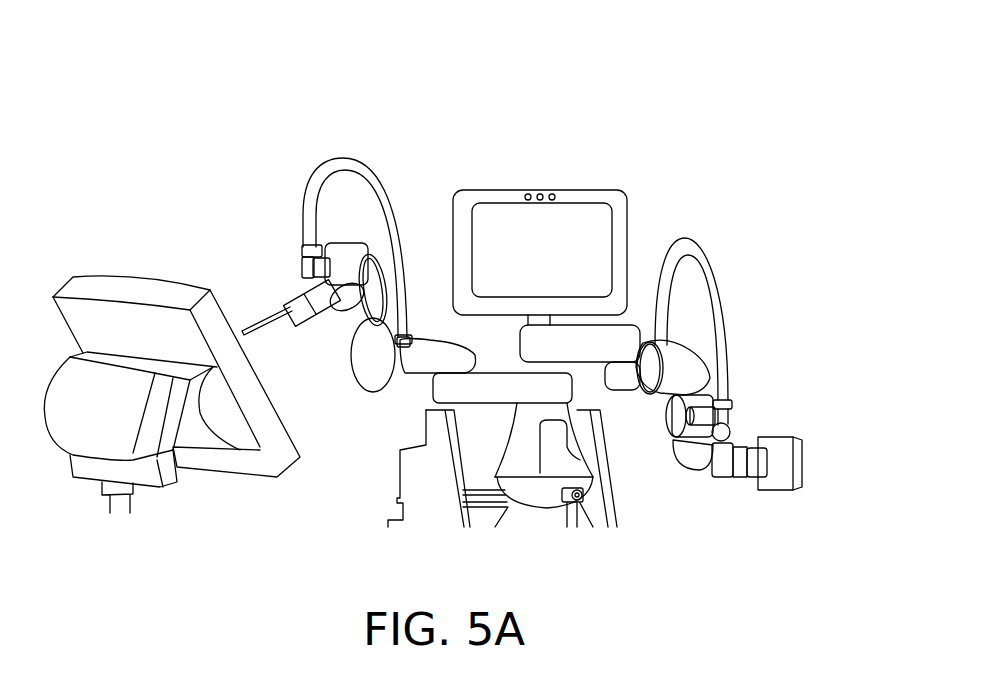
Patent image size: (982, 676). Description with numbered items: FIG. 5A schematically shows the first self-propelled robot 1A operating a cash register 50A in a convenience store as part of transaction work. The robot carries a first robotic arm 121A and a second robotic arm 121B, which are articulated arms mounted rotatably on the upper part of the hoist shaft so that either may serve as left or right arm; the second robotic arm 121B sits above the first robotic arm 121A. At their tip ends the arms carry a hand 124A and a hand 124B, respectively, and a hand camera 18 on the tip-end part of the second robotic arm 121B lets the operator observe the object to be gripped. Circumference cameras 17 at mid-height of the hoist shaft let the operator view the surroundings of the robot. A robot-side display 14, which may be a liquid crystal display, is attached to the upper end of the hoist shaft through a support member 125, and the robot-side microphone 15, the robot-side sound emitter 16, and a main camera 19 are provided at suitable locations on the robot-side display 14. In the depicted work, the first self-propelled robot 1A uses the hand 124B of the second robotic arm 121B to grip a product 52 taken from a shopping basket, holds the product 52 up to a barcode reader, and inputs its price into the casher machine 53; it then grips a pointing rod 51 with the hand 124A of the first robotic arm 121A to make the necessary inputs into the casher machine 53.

The cash register 50A is at (428, 20).
The first self-propelled robot 1A is at (608, 117).
The robot-side display 14 is at (603, 192).
The robot-side microphone 15 is at (528, 193).
The robot-side sound emitter 16 is at (555, 193).
The circumference cameras 17 is at (600, 485).
The hand camera 18 is at (727, 427).
The main camera 19 is at (540, 193).
The pointing rod 51 is at (270, 317).
The product 52 is at (778, 450).
The casher machine 53 is at (117, 270).
The first robotic arm 121A is at (283, 241).
The second robotic arm 121B is at (732, 291).
The hand 124A is at (320, 318).
The hand 124B is at (743, 473).
The support member 125 is at (523, 323).